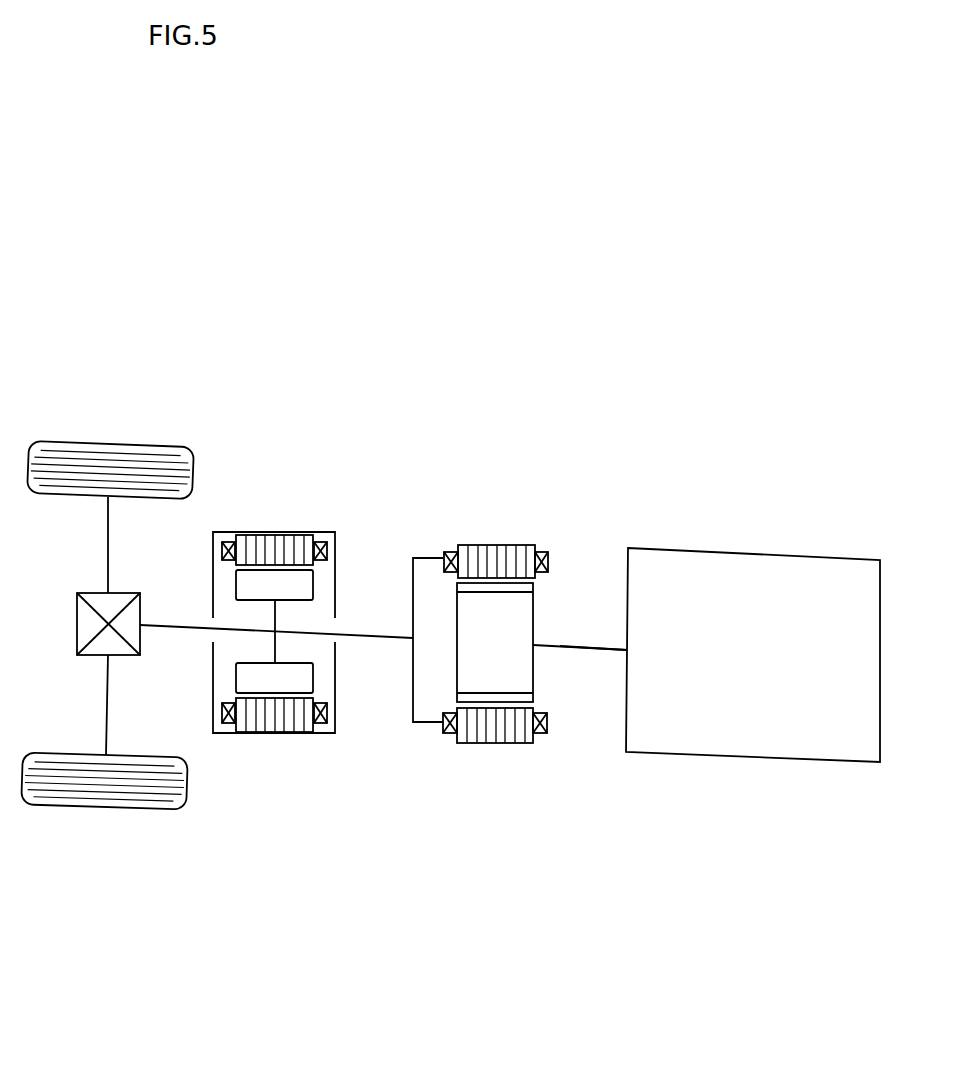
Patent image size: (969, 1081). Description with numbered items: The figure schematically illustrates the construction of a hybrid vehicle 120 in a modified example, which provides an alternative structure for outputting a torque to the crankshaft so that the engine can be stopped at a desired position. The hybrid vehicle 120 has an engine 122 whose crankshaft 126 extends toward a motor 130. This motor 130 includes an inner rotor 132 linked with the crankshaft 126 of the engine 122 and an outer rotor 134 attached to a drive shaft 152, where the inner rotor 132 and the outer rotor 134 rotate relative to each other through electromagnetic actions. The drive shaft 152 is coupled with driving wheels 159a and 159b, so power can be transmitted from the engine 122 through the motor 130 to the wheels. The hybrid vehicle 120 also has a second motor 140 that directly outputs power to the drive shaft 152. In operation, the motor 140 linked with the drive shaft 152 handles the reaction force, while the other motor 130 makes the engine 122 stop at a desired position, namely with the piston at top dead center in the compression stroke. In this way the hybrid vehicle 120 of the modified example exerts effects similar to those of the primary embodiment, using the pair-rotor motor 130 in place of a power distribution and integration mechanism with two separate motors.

The hybrid vehicle 120 is at (635, 385).
The engine 122 is at (753, 552).
The crankshaft 126 is at (602, 652).
The motor 130 is at (505, 571).
The inner rotor 132 is at (535, 617).
The outer rotor 134 is at (485, 545).
The motor 140 is at (285, 533).
The drive shaft 152 is at (375, 638).
The driving wheel 159a is at (98, 447).
The driving wheel 159b is at (100, 808).